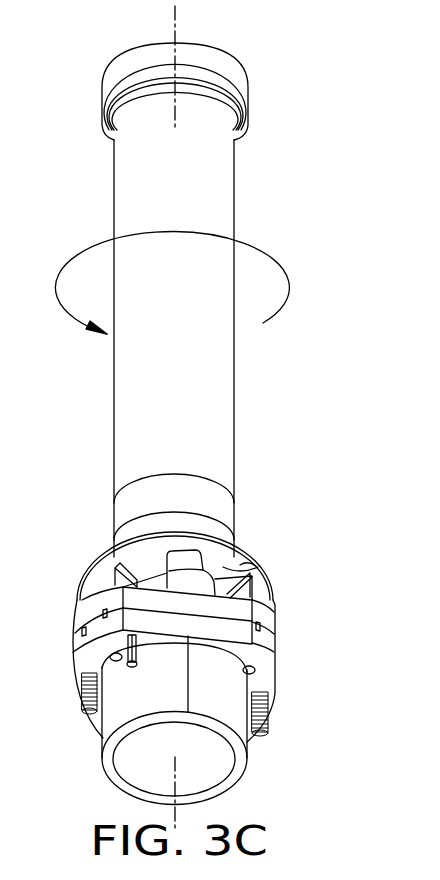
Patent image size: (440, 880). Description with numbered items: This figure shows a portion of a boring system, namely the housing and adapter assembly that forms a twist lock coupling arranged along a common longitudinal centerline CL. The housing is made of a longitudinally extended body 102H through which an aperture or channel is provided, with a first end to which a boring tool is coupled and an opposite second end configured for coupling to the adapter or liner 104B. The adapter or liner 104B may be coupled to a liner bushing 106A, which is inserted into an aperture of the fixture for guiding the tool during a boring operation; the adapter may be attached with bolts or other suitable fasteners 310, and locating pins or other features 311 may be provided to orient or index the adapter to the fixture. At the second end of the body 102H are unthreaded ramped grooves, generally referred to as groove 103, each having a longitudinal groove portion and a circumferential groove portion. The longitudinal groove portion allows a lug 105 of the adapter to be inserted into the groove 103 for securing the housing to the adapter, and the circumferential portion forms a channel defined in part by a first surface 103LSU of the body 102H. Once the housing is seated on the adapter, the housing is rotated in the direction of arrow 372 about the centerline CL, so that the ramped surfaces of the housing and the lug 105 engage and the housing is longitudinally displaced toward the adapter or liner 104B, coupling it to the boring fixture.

The longitudinal centerline CL is at (177, 32).
The body 102H is at (234, 397).
The arrow 372 is at (247, 239).
The adapter or liner 104B is at (276, 648).
The lug 105 is at (100, 577).
The groove 103 is at (204, 588).
The first surface 103LSU is at (248, 573).
The liner bushing 106A is at (98, 722).
The fasteners 310 is at (83, 683).
The locating pins 311 is at (134, 668).